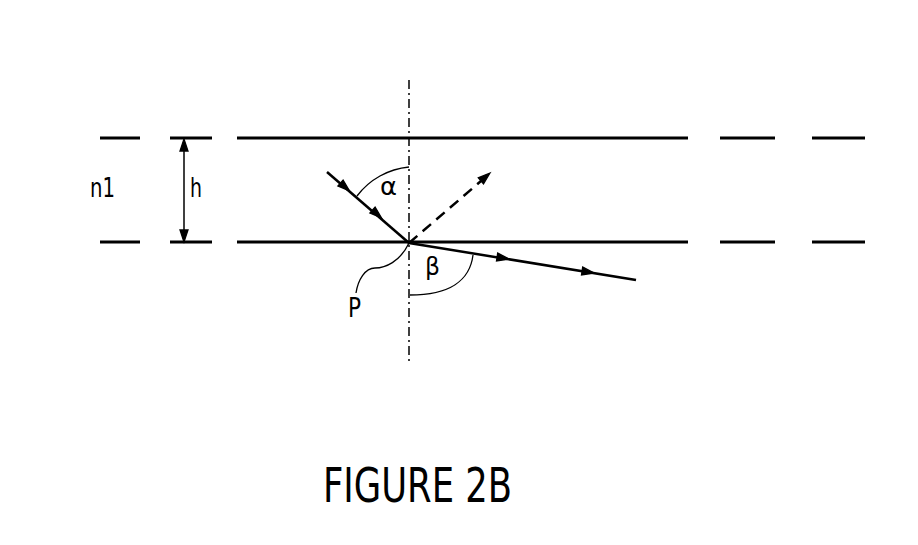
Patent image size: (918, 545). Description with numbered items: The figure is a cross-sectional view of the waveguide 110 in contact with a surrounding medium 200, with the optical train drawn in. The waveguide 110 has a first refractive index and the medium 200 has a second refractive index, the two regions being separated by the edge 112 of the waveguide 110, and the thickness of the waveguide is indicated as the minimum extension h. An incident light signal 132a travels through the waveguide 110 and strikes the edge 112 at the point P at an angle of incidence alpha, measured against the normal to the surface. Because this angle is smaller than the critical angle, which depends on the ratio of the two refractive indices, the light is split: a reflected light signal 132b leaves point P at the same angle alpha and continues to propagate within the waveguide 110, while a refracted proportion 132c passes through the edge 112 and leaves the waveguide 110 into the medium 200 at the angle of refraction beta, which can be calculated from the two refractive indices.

The waveguide 110 is at (482, 172).
The edge 112 is at (255, 243).
The medium 200 is at (461, 300).
The incident light signal 132a is at (336, 170).
The reflected light signal 132b is at (453, 210).
The refracted light signal 132c is at (607, 282).